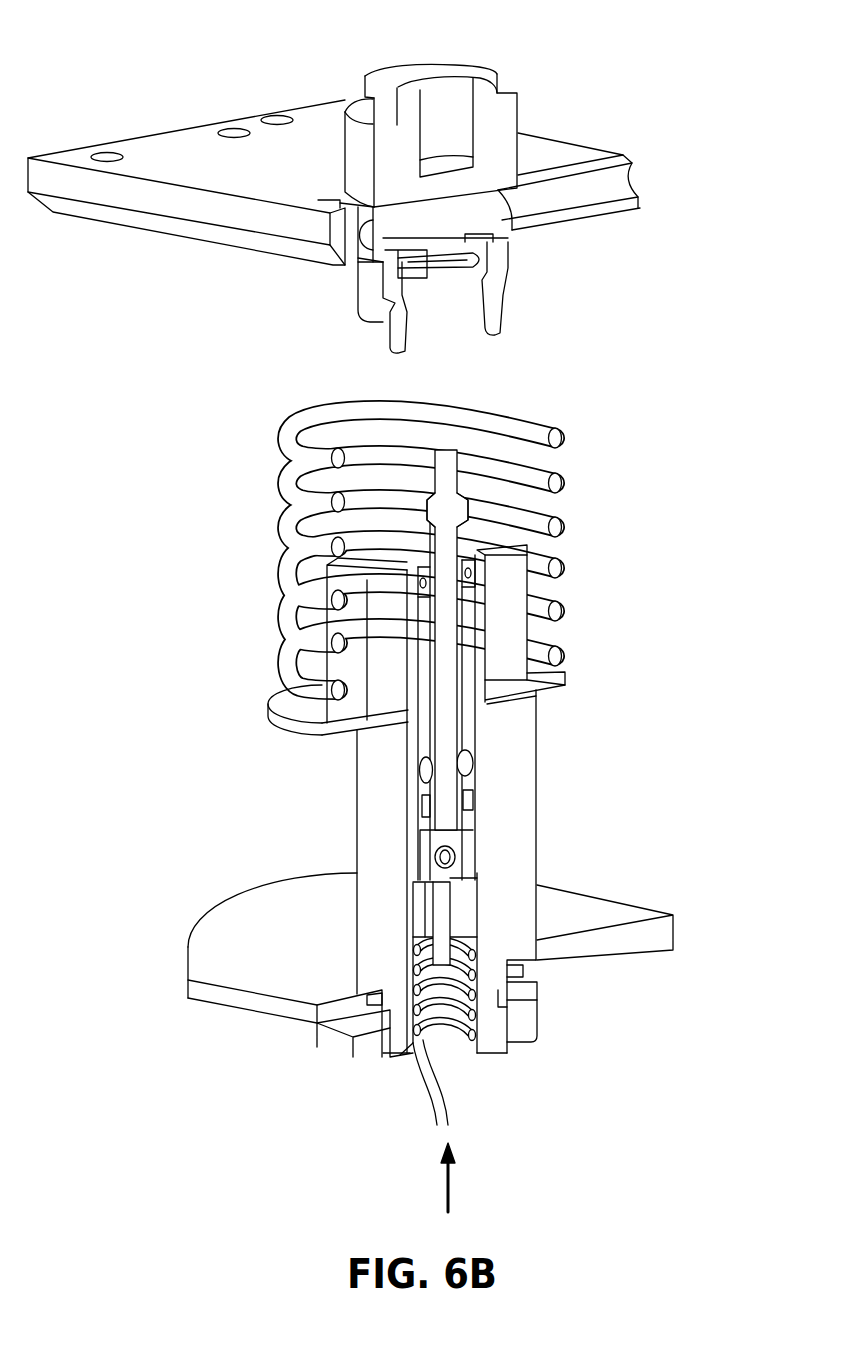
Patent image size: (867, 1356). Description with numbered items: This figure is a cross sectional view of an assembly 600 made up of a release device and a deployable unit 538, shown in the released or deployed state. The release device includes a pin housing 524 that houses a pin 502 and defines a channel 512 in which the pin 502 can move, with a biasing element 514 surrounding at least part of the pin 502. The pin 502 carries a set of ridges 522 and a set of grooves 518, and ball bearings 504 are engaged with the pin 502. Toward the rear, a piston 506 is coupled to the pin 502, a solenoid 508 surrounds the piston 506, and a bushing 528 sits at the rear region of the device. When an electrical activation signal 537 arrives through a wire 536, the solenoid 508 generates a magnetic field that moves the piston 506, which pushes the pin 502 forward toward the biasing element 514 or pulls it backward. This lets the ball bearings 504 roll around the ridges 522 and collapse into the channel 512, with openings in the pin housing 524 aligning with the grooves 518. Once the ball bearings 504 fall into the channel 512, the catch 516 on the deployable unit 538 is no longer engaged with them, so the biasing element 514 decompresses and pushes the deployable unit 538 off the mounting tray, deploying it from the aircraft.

The deployable unit 538 is at (169, 130).
The assembly 600 is at (601, 82).
The catch 516 is at (507, 267).
The biasing element 514 is at (560, 560).
The ridges 522 is at (470, 497).
The pin housing 524 is at (274, 686).
The channel 512 is at (472, 663).
The pin 502 is at (472, 700).
The grooves 518 is at (472, 732).
The ball bearings 504 is at (482, 754).
The piston 506 is at (465, 924).
The solenoid 508 is at (465, 1029).
The wire 536 is at (460, 1087).
The bushing 528 is at (178, 989).
The electrical activation signal 537 is at (429, 1177).